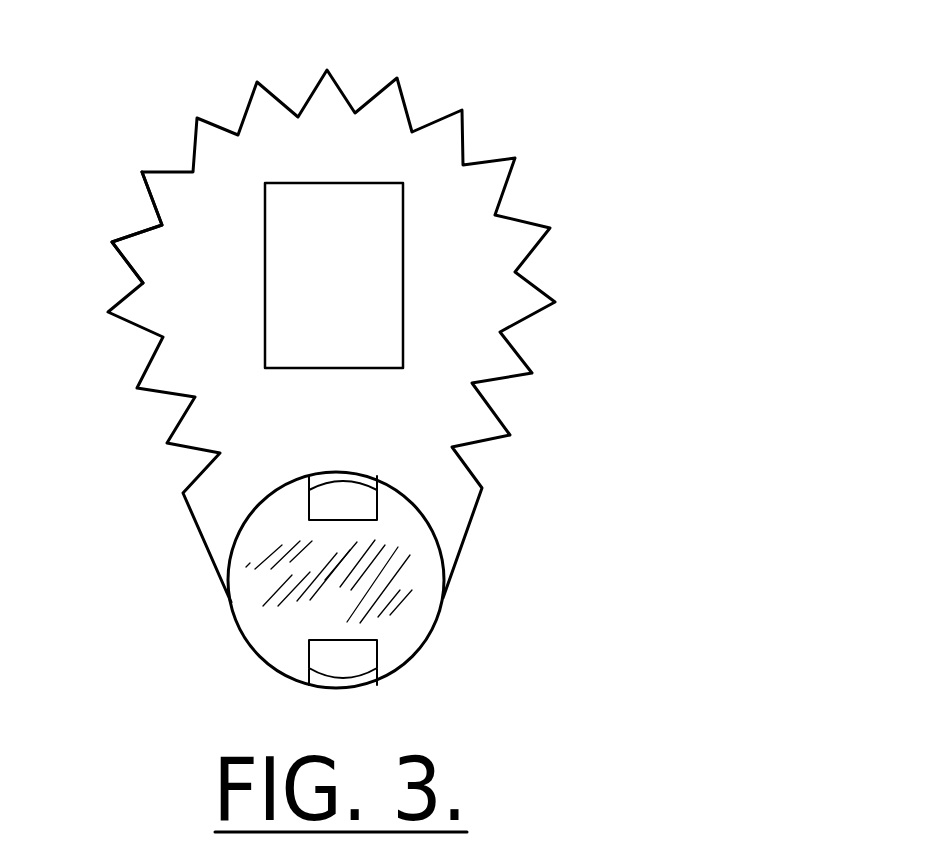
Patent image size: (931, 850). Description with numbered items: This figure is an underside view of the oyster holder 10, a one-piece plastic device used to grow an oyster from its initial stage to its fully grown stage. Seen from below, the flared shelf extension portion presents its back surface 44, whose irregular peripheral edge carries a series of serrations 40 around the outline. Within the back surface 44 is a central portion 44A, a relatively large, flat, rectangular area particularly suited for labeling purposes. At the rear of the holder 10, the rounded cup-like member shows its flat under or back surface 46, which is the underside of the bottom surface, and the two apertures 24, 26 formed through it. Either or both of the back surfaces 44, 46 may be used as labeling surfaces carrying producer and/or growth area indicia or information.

The oyster holder 10 is at (509, 112).
The serrations 40 is at (142, 172).
The back surface 44 is at (210, 308).
The central portion 44A is at (365, 300).
The aperture 24 is at (348, 507).
The aperture 26 is at (299, 677).
The under or back surface 46 is at (388, 582).